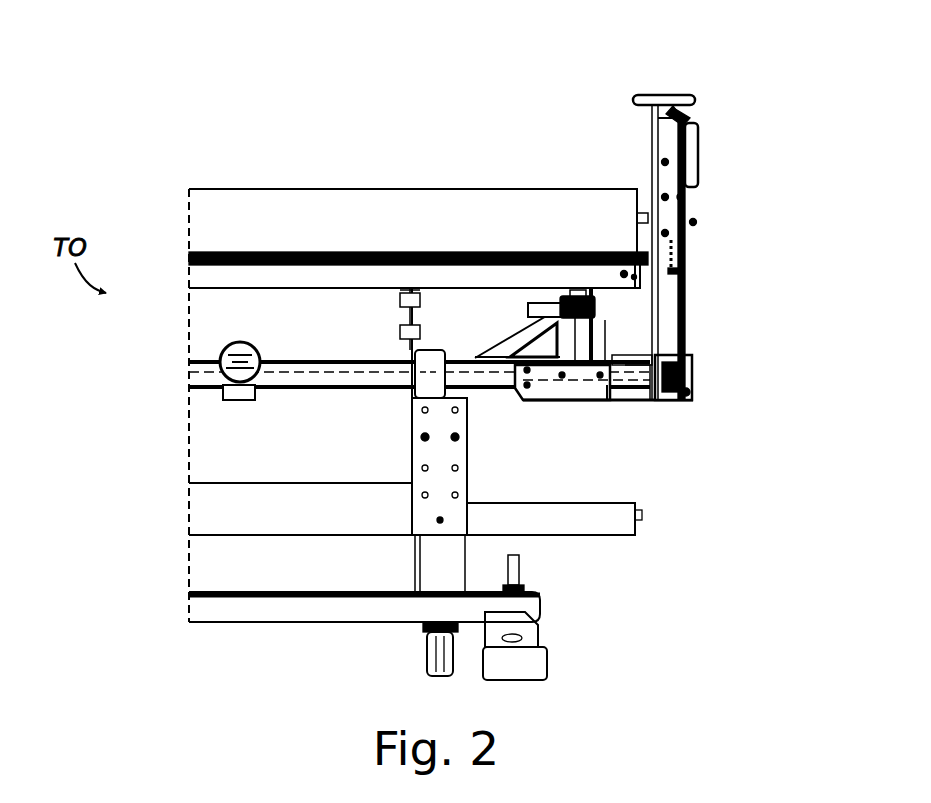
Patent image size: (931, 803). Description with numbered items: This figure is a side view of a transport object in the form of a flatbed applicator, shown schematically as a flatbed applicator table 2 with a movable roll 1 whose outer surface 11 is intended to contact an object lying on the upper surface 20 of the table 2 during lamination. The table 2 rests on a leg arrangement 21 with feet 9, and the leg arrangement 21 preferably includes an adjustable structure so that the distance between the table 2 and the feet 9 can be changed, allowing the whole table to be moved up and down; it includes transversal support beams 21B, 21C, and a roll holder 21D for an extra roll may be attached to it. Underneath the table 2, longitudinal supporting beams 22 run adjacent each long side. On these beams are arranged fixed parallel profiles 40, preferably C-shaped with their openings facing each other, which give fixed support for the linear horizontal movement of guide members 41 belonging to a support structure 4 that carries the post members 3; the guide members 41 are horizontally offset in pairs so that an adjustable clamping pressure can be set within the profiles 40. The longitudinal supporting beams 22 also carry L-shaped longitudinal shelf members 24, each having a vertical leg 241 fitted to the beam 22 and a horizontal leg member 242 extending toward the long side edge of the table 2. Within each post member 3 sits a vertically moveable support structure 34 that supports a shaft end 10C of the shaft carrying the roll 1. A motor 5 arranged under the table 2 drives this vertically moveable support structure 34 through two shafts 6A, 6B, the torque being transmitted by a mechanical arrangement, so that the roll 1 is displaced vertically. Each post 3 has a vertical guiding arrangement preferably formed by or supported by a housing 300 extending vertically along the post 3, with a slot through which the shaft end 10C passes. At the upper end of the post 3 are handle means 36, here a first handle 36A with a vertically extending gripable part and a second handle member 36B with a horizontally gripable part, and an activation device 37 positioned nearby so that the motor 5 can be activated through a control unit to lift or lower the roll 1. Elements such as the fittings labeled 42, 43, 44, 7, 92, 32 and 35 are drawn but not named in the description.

The movable roll 1 is at (234, 186).
The outer surface 11 is at (273, 205).
The flatbed applicator table 2 is at (330, 252).
The upper surface 20 is at (395, 252).
The bracket 42 is at (513, 340).
The guide members 41 is at (566, 300).
The shaft end 10C is at (652, 235).
The second handle member 36B is at (667, 92).
The activation device 37 is at (690, 117).
The handle means 36 is at (708, 128).
The first handle 36A is at (700, 150).
The guide 32 is at (697, 203).
The post member 3 is at (697, 222).
The housing 300 is at (693, 243).
The vertically moveable support structure 34 is at (692, 270).
The longitudinal supporting beams 22 is at (595, 305).
The longitudinal shelf members 24 is at (618, 362).
The horizontal leg member 242 is at (694, 392).
The pivot block 35 is at (672, 402).
The bushing 43 is at (630, 392).
The support structure 4 is at (603, 410).
The vertical leg 241 is at (590, 392).
The fixed parallel profiles 40 is at (572, 388).
The roll holder 21D is at (627, 527).
The leg arrangement 21 is at (472, 555).
The feet 9 is at (555, 663).
The caster wheel 92 is at (422, 668).
The transversal support beam 21B is at (265, 625).
The transversal support beam 21C is at (218, 538).
The sensor 7 is at (234, 407).
The shaft 6A is at (183, 378).
The motor 5 is at (236, 348).
The shaft 6B is at (290, 362).
The slide block 44 is at (300, 390).